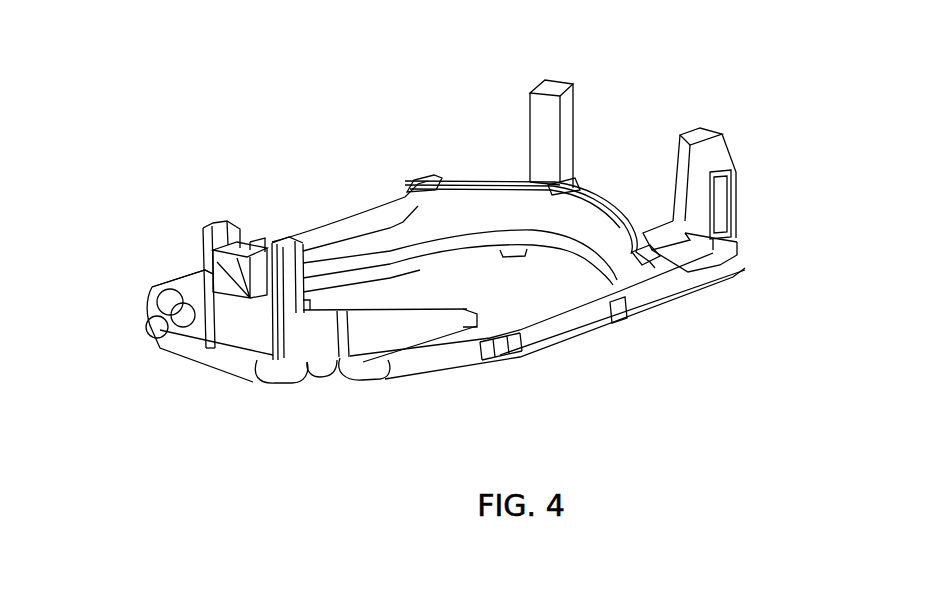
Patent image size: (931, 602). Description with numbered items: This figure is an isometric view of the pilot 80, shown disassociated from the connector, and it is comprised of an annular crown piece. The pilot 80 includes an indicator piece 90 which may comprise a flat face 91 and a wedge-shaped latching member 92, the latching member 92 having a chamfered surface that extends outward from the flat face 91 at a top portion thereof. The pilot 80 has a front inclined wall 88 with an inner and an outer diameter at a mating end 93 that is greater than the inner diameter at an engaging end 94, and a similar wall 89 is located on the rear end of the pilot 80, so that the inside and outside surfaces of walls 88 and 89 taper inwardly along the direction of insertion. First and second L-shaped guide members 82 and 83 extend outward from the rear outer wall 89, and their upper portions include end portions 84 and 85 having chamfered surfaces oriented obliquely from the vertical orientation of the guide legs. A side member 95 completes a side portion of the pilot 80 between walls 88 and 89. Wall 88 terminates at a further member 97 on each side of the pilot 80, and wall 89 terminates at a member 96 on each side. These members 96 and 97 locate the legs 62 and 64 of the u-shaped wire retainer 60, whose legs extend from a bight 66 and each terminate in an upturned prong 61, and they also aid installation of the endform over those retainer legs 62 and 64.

The pilot 80 is at (365, 86).
The wire retainer 60 is at (197, 275).
The upturned prong 61 is at (728, 220).
The leg 62 is at (547, 310).
The leg 64 is at (357, 225).
The bight 66 is at (238, 372).
The first L-shaped guide member 82 is at (567, 170).
The second L-shaped guide member 83 is at (693, 235).
The end portion 84 is at (567, 93).
The end portion 85 is at (710, 154).
The front inclined wall 88 is at (377, 345).
The rear wall 89 is at (508, 204).
The indicator piece 90 is at (221, 233).
The flat face 91 is at (240, 330).
The wedge-shaped latching member 92 is at (265, 275).
The mating end 93 is at (590, 194).
The engaging end 94 is at (564, 252).
The side member 95 is at (577, 332).
The member 96 is at (414, 183).
The member 97 is at (470, 316).